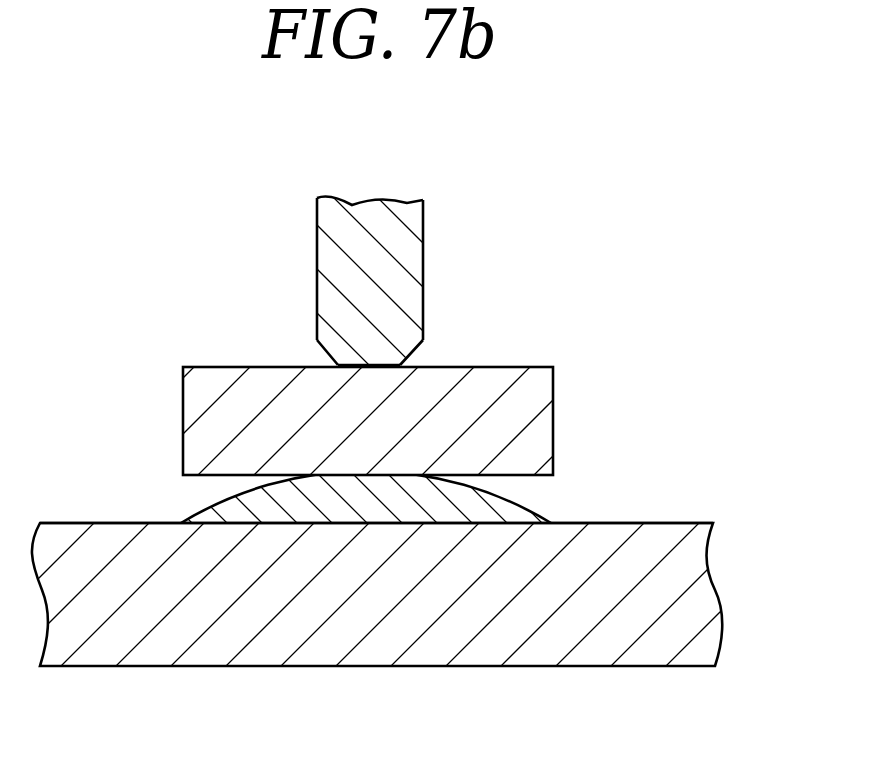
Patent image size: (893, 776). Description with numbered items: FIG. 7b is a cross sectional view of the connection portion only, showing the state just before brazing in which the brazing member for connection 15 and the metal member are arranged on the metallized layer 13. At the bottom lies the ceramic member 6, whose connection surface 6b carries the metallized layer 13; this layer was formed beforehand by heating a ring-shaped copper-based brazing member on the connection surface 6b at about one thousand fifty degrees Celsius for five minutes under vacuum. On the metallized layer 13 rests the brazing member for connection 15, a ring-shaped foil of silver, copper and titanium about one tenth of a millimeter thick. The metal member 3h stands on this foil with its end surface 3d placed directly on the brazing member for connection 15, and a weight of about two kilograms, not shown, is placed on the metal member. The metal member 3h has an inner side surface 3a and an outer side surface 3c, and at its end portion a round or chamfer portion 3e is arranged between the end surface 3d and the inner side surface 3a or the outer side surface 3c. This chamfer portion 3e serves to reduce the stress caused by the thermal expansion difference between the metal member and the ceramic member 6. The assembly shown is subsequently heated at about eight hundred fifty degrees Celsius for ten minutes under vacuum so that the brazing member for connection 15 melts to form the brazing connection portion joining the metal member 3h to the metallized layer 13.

The inner side surface 3a is at (424, 246).
The outer side surface 3c is at (317, 237).
The end surface 3d is at (372, 367).
The chamfer portion 3e is at (318, 348).
The metal member 3h is at (368, 213).
The ceramic member 6 is at (702, 607).
The connection surface 6b is at (660, 522).
The metallized layer 13 is at (510, 517).
The brazing member for connection 15 is at (537, 394).